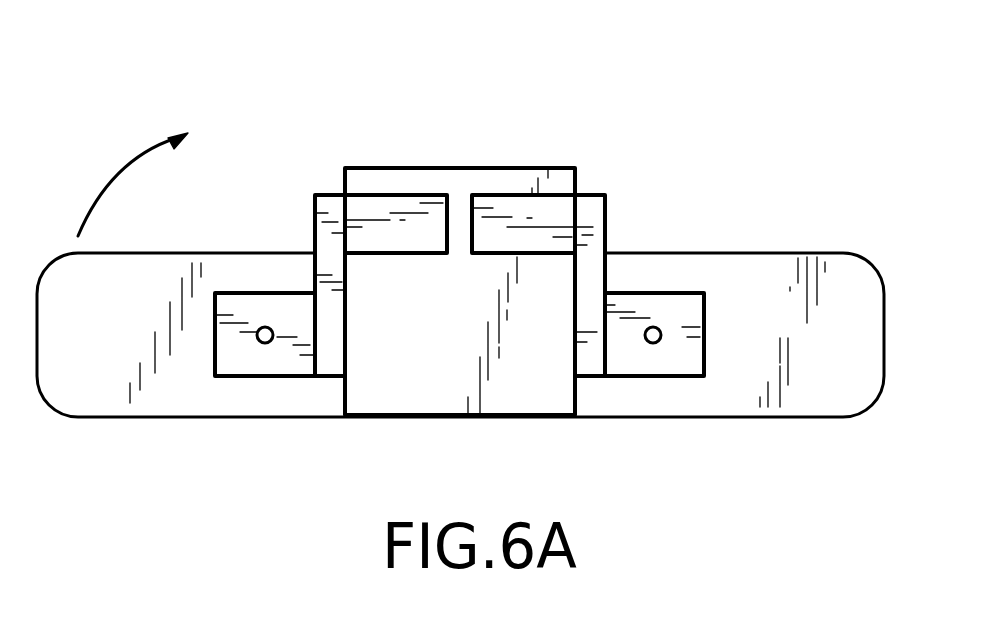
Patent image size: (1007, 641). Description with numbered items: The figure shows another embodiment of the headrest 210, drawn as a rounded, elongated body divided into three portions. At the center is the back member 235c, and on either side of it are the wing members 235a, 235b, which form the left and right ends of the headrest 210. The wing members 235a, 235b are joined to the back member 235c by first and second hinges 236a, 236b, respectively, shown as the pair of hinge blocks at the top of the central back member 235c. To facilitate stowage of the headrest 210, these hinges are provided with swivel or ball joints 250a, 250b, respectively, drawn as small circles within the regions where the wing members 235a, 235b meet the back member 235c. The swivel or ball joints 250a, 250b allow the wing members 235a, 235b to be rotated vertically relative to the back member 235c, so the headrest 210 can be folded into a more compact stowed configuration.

The headrest 210 is at (752, 83).
The first wing member 235a is at (138, 345).
The second wing member 235b is at (797, 338).
The back member 235c is at (438, 341).
The first hinge 236a is at (380, 195).
The second hinge 236b is at (512, 195).
The first swivel or ball joint 250a is at (268, 343).
The second swivel or ball joint 250b is at (657, 343).